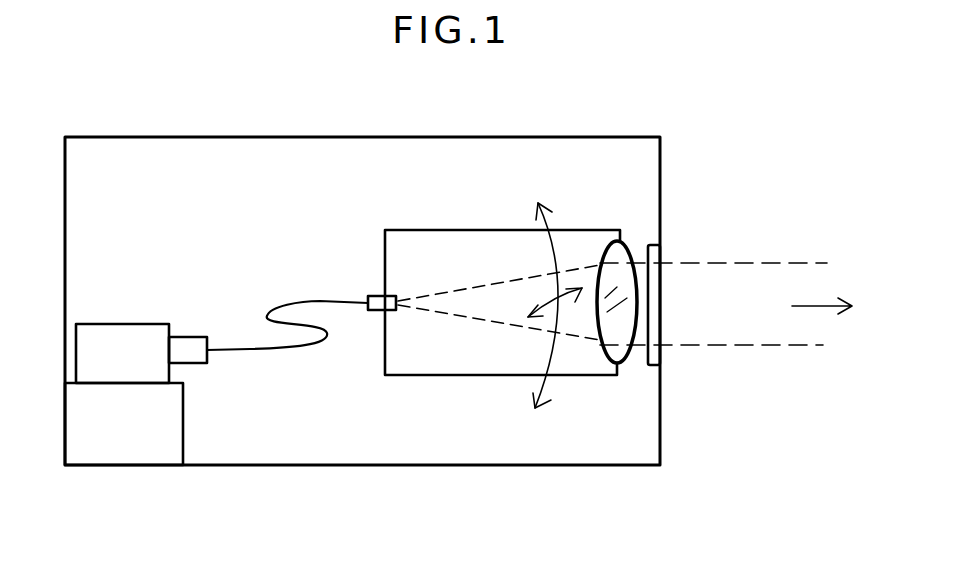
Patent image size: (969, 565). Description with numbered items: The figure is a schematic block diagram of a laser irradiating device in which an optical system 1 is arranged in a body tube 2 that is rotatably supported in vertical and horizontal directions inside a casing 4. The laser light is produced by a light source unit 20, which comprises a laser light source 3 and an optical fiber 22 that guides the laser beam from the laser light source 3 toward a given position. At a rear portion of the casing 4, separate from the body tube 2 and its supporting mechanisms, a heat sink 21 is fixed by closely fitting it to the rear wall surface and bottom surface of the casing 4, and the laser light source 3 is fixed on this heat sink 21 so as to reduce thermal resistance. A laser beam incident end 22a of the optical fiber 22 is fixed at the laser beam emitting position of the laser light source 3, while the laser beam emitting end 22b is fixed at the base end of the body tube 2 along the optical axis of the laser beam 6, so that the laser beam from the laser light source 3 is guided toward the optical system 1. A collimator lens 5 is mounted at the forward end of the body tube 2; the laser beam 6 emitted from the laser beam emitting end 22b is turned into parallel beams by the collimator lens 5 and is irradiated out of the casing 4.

The optical system 1 is at (578, 257).
The body tube 2 is at (443, 375).
The laser light source 3 is at (116, 324).
The casing 4 is at (372, 137).
The collimator lens 5 is at (617, 350).
The laser beam 6 is at (460, 290).
The light source unit 20 is at (232, 295).
The heat sink 21 is at (183, 432).
The optical fiber 22 is at (317, 300).
The laser beam incident end 22a is at (190, 350).
The laser beam emitting end 22b is at (372, 296).